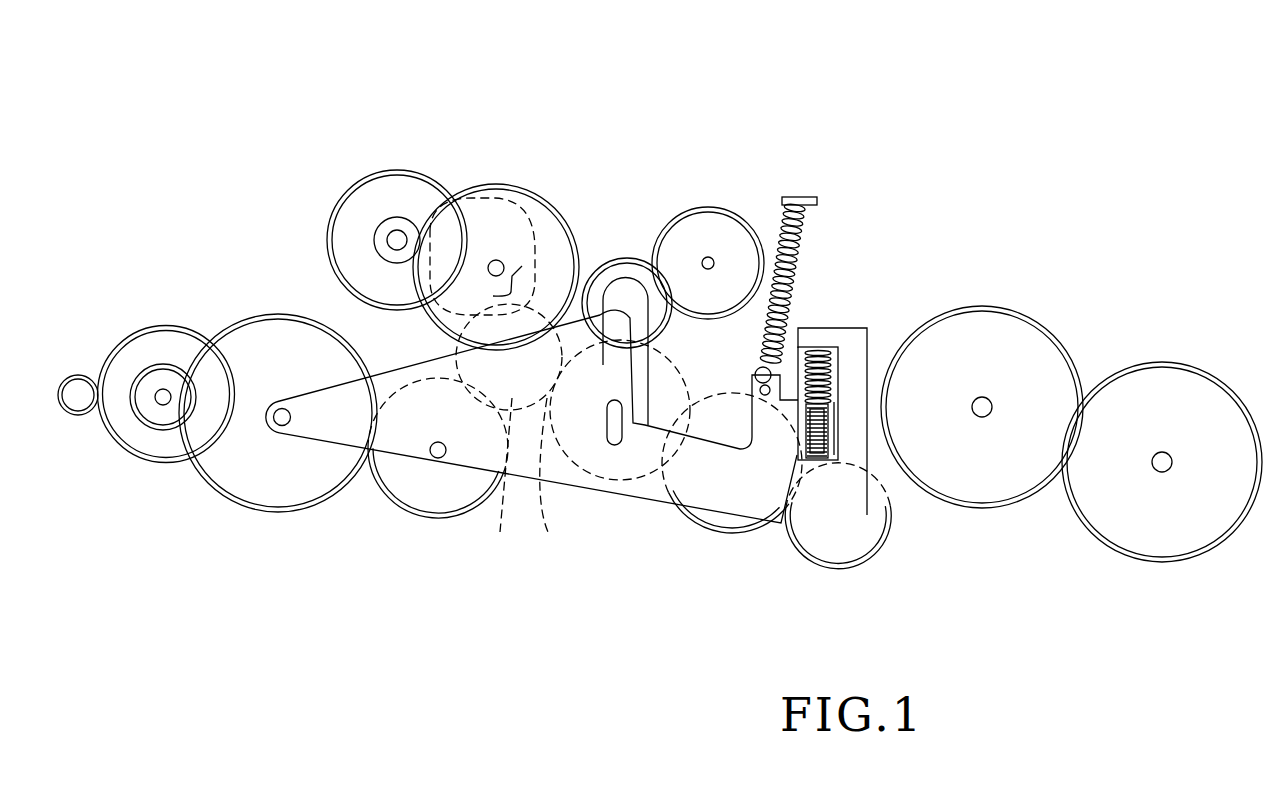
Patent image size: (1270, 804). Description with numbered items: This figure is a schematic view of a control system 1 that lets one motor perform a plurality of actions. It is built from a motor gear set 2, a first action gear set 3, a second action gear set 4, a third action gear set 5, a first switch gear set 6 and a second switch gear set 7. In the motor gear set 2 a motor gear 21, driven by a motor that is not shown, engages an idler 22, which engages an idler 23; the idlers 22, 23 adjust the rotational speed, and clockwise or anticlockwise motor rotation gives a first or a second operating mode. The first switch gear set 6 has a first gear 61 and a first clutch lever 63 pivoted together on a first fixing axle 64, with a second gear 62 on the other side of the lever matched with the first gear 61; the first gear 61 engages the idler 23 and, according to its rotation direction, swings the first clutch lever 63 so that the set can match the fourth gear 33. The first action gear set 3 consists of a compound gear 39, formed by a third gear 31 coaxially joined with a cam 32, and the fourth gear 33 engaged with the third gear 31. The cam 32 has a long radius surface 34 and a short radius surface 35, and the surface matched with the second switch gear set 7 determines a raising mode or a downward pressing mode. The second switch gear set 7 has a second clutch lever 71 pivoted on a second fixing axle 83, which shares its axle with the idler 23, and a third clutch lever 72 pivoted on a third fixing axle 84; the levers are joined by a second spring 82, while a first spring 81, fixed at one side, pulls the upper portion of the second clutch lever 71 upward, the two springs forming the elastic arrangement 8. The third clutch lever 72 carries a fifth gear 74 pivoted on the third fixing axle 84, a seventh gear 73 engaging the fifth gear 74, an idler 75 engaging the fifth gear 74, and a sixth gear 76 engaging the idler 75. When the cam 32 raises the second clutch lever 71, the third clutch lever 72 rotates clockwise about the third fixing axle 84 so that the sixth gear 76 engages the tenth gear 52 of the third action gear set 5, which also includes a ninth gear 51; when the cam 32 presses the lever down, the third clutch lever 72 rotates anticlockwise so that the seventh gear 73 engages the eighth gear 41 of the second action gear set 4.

The control system 1 is at (1047, 111).
The motor gear set 2 is at (213, 538).
The motor gear 21 is at (80, 416).
The idler 22 is at (130, 460).
The idler 23 is at (205, 480).
The first action gear set 3 is at (442, 163).
The third gear 31 is at (553, 217).
The cam 32 is at (495, 212).
The fourth gear 33 is at (345, 220).
The long radius surface 34 is at (433, 340).
The short radius surface 35 is at (505, 294).
The compound gear 39 is at (500, 108).
The second action gear set 4 is at (712, 190).
The eighth gear 41 is at (713, 220).
The third action gear set 5 is at (1098, 356).
The ninth gear 51 is at (1163, 545).
The tenth gear 52 is at (980, 492).
The first switch gear set 6 is at (491, 580).
The first gear 61 is at (475, 485).
The second gear 62 is at (538, 505).
The first clutch lever 63 is at (500, 510).
The first fixing axle 64 is at (436, 458).
The second switch gear set 7 is at (707, 558).
The second clutch lever 71 is at (583, 478).
The third clutch lever 72 is at (858, 342).
The seventh gear 73 is at (622, 265).
The fifth gear 74 is at (620, 447).
The idler 75 is at (737, 520).
The sixth gear 76 is at (838, 553).
The elastic unit 8 is at (843, 243).
The first spring 81 is at (803, 218).
The second spring 82 is at (815, 348).
The second fixing axle 83 is at (291, 419).
The third fixing axle 84 is at (670, 364).